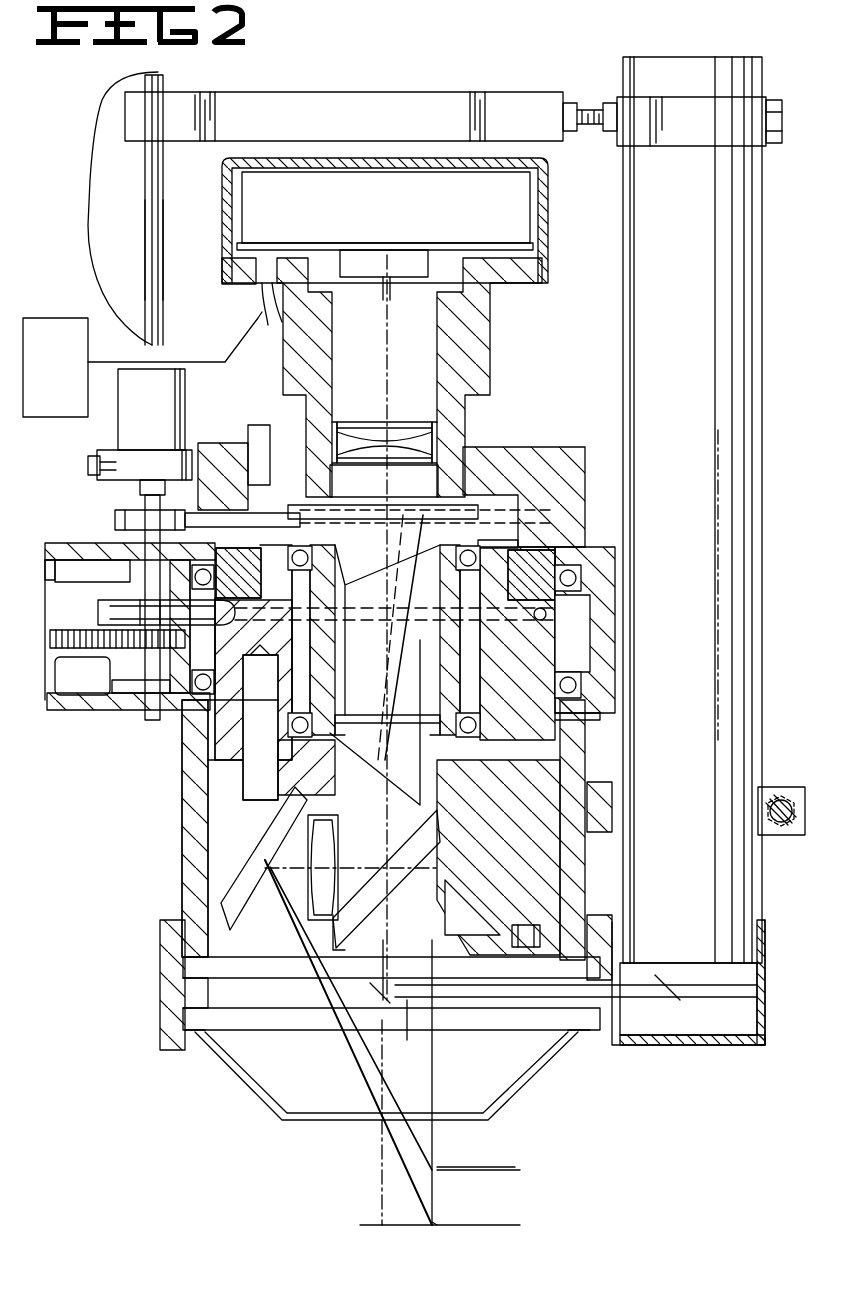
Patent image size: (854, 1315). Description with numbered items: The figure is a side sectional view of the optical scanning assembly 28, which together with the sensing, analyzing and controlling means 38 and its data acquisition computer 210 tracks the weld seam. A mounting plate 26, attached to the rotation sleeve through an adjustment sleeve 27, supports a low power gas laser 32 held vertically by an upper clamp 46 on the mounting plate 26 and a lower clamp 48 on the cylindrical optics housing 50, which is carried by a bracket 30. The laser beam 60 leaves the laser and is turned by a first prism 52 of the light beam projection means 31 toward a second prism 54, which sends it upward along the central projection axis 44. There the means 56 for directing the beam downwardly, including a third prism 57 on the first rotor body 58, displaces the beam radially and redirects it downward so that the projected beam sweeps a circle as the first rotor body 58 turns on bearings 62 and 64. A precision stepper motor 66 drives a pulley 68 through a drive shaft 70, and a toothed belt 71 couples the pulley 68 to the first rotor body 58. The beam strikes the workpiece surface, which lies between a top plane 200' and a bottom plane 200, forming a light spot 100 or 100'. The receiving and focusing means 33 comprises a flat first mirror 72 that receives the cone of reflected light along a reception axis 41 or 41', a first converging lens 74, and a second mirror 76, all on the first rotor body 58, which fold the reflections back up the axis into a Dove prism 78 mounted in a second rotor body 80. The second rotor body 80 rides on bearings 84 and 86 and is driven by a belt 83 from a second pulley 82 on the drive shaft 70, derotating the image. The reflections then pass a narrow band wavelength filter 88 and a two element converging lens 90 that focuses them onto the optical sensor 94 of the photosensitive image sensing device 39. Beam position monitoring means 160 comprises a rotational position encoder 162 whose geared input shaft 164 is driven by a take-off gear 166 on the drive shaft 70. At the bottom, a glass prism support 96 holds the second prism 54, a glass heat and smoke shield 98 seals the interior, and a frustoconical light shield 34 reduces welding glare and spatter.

The mounting plate 26 is at (367, 134).
The adjustment sleeve 27 is at (125, 208).
The optical scanning assembly 28 is at (645, 1130).
The bracket 30 is at (103, 705).
The light beam projection means 31 is at (675, 1042).
The low power gas laser 32 is at (700, 278).
The means for receiving and focusing reflections 33 is at (292, 428).
The frustoconical light shield 34 is at (236, 1075).
The sensing, analyzing and controlling means 38 is at (76, 297).
The photosensitive image sensing device 39 is at (400, 228).
The reception axis 41 is at (352, 740).
The reception axis 41' is at (351, 1018).
The central projection axis 44 is at (382, 1195).
The upper clamp 46 is at (740, 138).
The lower clamp 48 is at (776, 787).
The cylindrical optics housing 50 is at (190, 845).
The first prism 52 is at (690, 990).
The second prism 54 is at (398, 1012).
The means for directing the beam downwardly 56 is at (462, 940).
The third prism 57 is at (383, 926).
The first rotor body 58 is at (570, 895).
The laser beam 60 is at (432, 1068).
The bearing 62 is at (583, 578).
The bearing 64 is at (585, 685).
The precision stepper motor 66 is at (162, 426).
The pulley 68 is at (117, 584).
The drive shaft 70 is at (148, 496).
The belt 71 is at (95, 612).
The first mirror 72 is at (240, 902).
The first converging lens 74 is at (340, 848).
The second mirror 76 is at (416, 842).
The Dove prism 78 is at (362, 742).
The second rotor body 80 is at (475, 512).
The second pulley 82 is at (128, 518).
The belt 83 is at (237, 525).
The second rotor body bearing 84 is at (481, 548).
The second rotor body bearing 86 is at (478, 727).
The narrow band wavelength filter 88 is at (376, 494).
The two element converging lens 90 is at (435, 437).
The optical sensor 94 is at (400, 276).
The glass prism support 96 is at (250, 978).
The glass heat and smoke shield 98 is at (305, 1016).
The light spot 100 is at (463, 1208).
The light spot 100' is at (476, 1153).
The beam position monitoring means 160 is at (118, 693).
The rotational position encoder 162 is at (100, 690).
The geared input shaft 164 is at (60, 648).
The take-off gear 166 is at (185, 634).
The bottom plane 200 is at (467, 1209).
The top plane 200' is at (508, 1156).
The data acquisition computer 210 is at (75, 379).